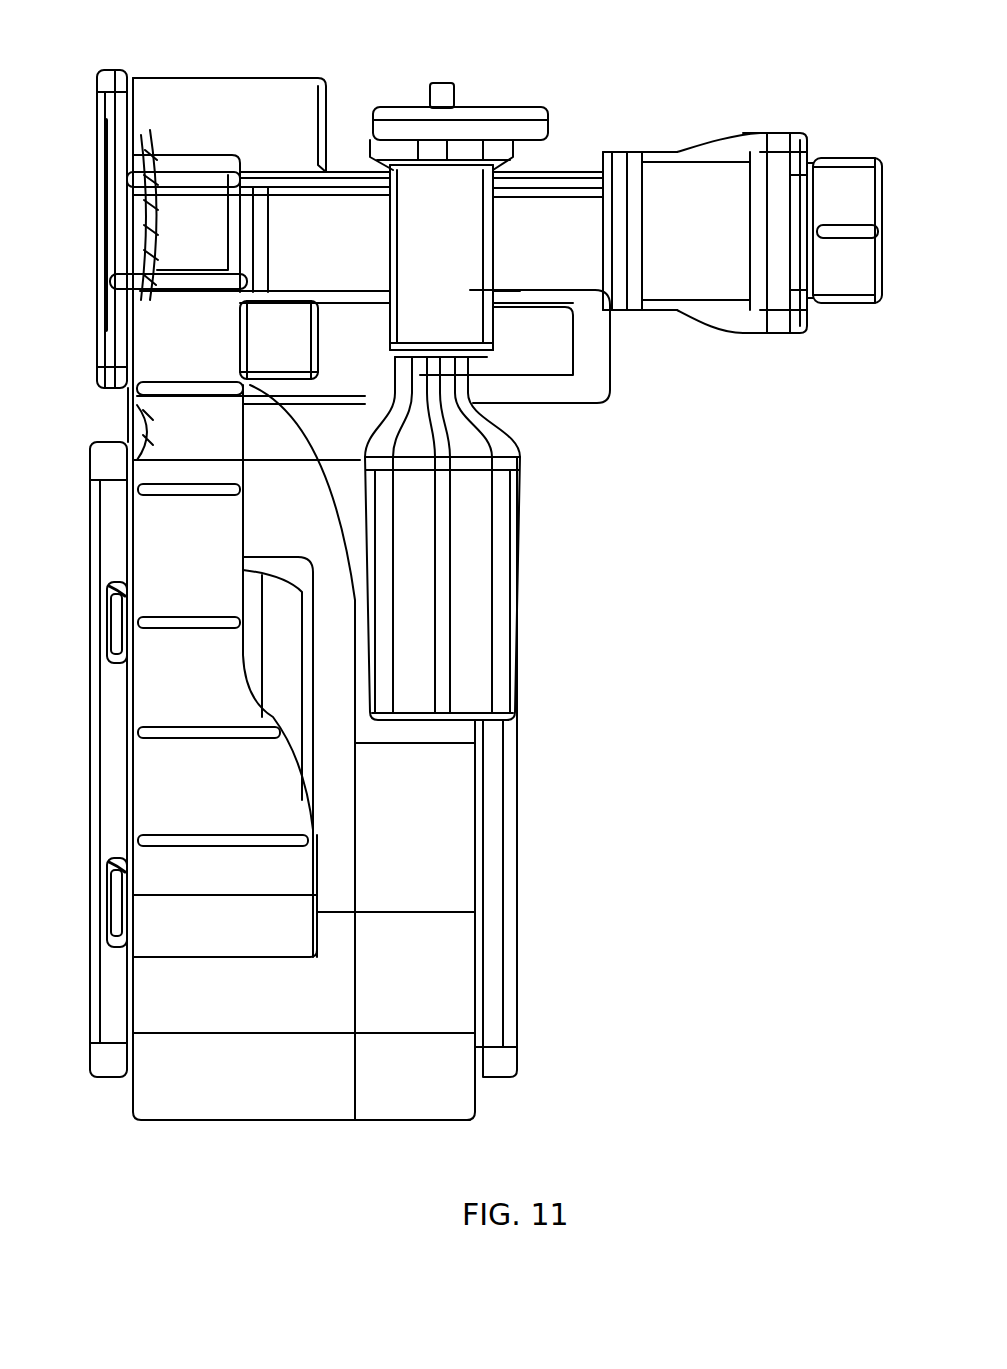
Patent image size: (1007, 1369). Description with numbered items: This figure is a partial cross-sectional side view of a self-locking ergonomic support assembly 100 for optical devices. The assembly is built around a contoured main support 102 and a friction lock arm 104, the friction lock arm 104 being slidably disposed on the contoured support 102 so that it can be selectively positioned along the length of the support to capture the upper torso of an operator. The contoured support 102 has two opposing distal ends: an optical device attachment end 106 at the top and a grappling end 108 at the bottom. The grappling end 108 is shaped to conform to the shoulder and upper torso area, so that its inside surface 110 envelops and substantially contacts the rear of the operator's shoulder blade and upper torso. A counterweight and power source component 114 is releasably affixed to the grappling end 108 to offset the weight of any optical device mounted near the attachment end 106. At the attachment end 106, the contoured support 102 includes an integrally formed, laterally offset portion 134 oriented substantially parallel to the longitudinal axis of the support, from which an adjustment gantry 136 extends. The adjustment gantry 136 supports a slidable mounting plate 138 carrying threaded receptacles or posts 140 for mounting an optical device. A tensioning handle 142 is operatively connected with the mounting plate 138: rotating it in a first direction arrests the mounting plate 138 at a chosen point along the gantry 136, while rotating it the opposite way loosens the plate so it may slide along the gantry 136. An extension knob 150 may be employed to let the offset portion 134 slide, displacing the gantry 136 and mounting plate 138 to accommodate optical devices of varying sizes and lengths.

The ergonomic support assembly 100 is at (727, 525).
The contoured main support 102 is at (251, 62).
The friction lock arm 104 is at (223, 527).
The optical device attachment end 106 is at (541, 93).
The grappling end 108 is at (490, 1104).
The inside surface 110 is at (330, 830).
The counterweight and power source component 114 is at (74, 531).
The laterally offset portion 134 is at (683, 178).
The adjustment gantry 136 is at (540, 265).
The mounting plate 138 is at (548, 130).
The threaded receptacles or posts 140 is at (445, 83).
The tensioning handle 142 is at (500, 578).
The extension knob 150 is at (837, 178).